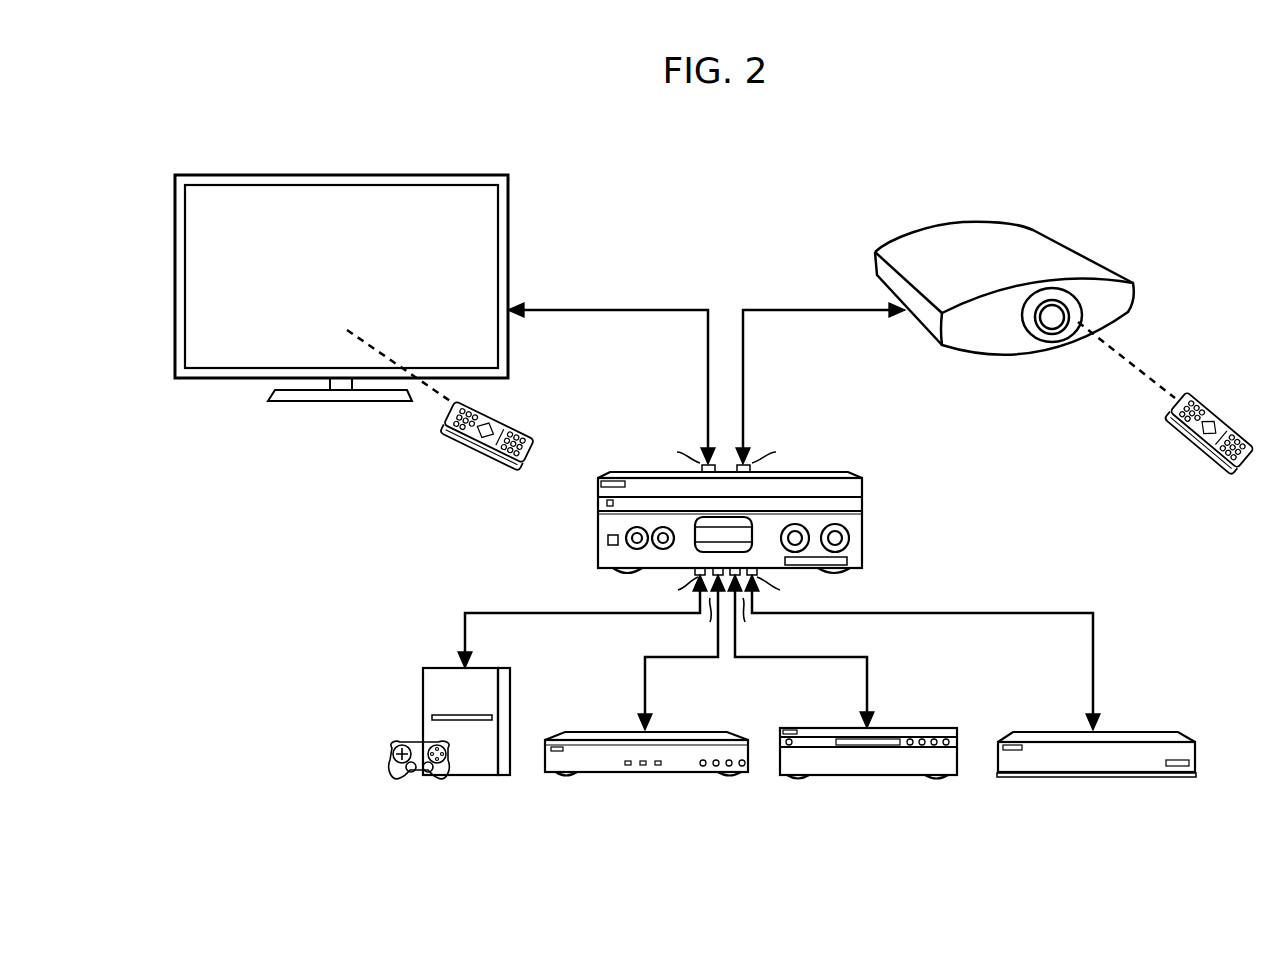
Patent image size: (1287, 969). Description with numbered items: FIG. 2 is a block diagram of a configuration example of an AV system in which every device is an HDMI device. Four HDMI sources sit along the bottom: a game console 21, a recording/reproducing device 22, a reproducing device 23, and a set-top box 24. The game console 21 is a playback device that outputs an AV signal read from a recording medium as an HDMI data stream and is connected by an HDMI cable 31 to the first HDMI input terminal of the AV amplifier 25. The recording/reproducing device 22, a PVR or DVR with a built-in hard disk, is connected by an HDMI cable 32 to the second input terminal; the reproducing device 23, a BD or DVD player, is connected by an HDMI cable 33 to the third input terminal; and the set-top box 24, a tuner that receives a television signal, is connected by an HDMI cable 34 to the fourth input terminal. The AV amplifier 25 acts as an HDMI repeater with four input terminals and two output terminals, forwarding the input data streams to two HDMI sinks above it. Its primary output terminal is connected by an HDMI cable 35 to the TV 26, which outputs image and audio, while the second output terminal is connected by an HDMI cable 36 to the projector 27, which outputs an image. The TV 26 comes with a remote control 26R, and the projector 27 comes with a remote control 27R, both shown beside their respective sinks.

The game console 21 is at (468, 775).
The recording/reproducing device 22 is at (648, 772).
The reproducing device 23 is at (866, 775).
The set-top box 24 is at (1093, 777).
The AV amplifier 25 is at (865, 527).
The TV 26 is at (341, 175).
The remote control 26R is at (476, 445).
The projector 27 is at (1073, 248).
The remote control 27R is at (1196, 440).
The HDMI cable 31 is at (507, 612).
The HDMI cable 32 is at (643, 680).
The HDMI cable 33 is at (870, 690).
The HDMI cable 34 is at (1097, 668).
The HDMI cable 35 is at (610, 312).
The HDMI cable 36 is at (819, 312).